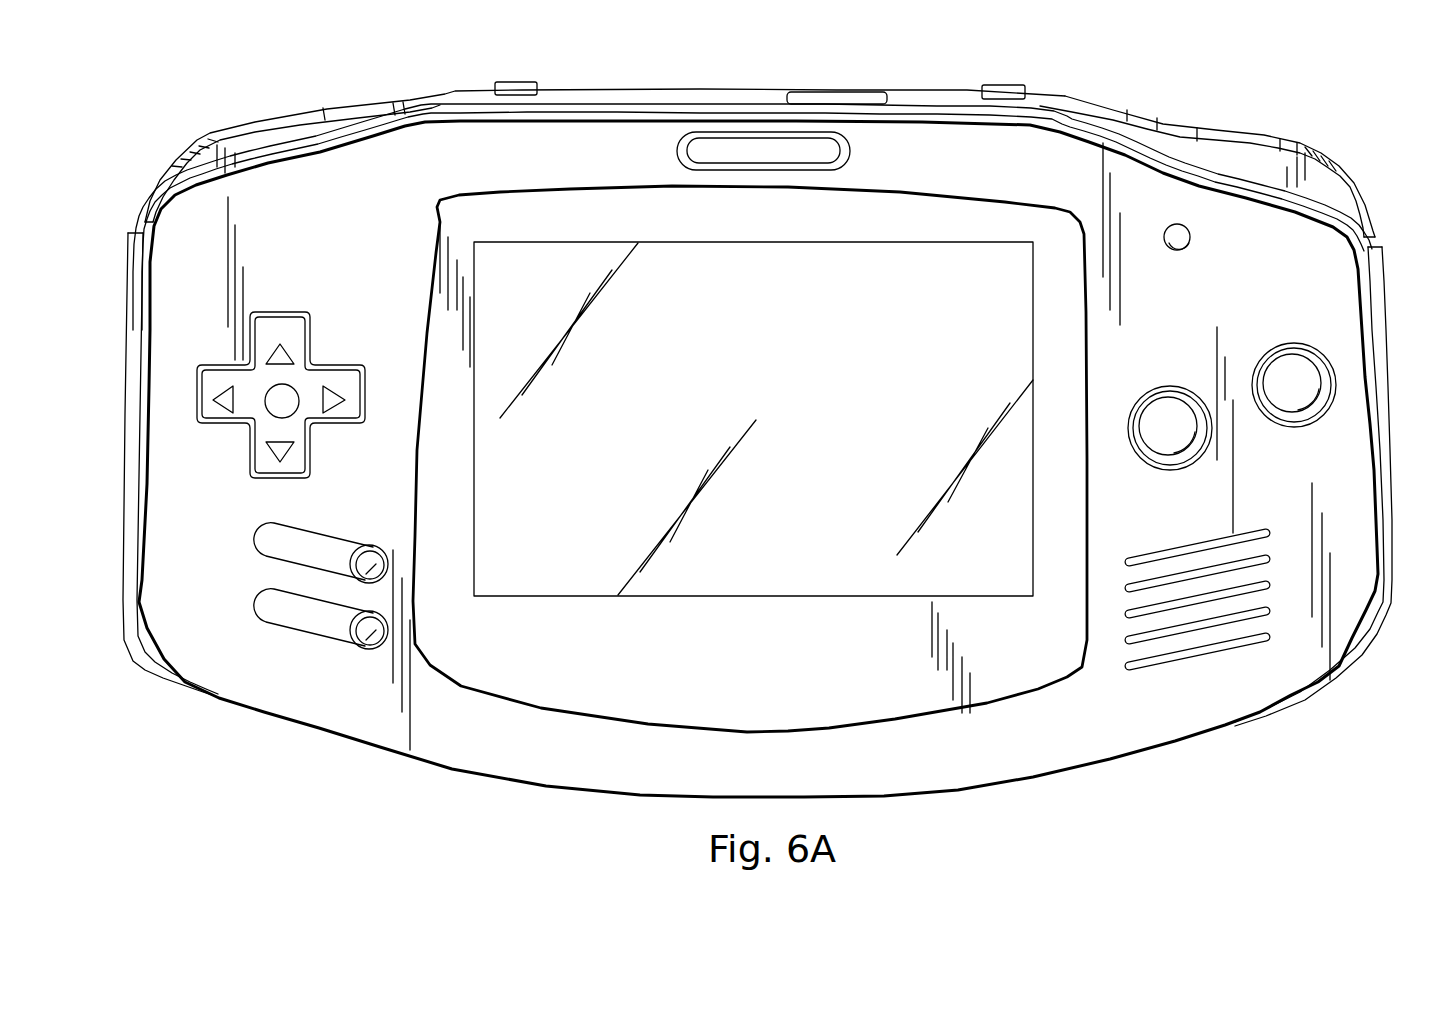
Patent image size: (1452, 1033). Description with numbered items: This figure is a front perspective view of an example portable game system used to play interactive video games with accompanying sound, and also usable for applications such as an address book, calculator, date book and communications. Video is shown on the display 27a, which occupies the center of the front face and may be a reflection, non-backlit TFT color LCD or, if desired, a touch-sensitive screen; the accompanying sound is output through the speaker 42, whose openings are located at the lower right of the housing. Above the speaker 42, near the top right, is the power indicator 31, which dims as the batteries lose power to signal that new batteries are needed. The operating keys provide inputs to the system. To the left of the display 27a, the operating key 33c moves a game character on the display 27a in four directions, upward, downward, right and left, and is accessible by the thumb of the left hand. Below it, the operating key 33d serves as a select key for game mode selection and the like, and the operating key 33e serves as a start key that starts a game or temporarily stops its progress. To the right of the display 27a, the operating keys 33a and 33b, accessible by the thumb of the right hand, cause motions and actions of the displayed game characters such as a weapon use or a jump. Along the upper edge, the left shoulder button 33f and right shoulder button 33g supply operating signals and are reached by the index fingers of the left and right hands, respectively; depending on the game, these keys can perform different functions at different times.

The left shoulder button 33f is at (243, 128).
The right shoulder button 33g is at (1318, 175).
The display 27a is at (990, 265).
The power indicator 31 is at (1177, 224).
The operating key 33c is at (200, 367).
The operating key 33d is at (353, 580).
The operating key 33e is at (353, 643).
The operating key 33a is at (1203, 460).
The operating key 33b is at (1310, 347).
The speaker 42 is at (1233, 647).